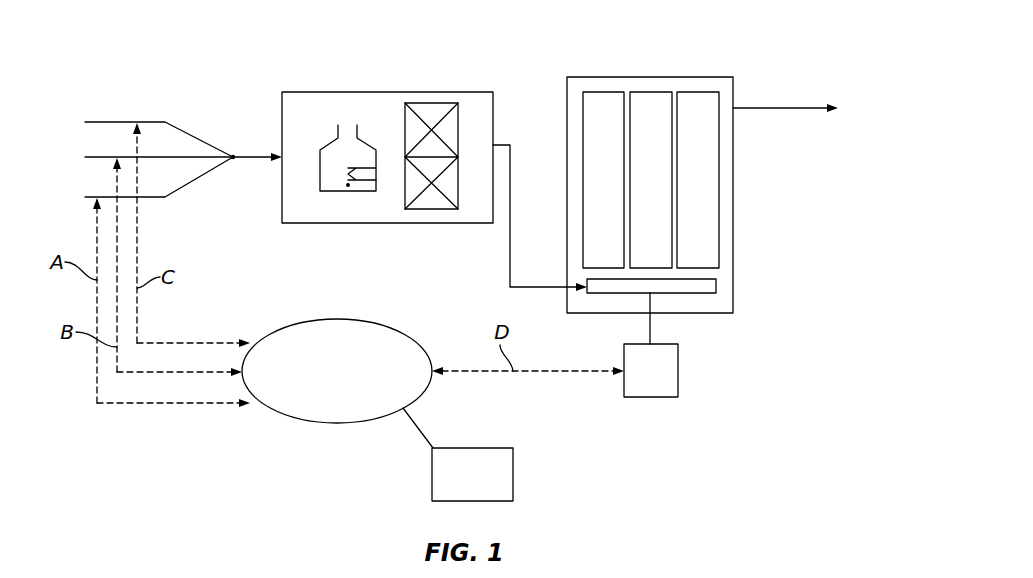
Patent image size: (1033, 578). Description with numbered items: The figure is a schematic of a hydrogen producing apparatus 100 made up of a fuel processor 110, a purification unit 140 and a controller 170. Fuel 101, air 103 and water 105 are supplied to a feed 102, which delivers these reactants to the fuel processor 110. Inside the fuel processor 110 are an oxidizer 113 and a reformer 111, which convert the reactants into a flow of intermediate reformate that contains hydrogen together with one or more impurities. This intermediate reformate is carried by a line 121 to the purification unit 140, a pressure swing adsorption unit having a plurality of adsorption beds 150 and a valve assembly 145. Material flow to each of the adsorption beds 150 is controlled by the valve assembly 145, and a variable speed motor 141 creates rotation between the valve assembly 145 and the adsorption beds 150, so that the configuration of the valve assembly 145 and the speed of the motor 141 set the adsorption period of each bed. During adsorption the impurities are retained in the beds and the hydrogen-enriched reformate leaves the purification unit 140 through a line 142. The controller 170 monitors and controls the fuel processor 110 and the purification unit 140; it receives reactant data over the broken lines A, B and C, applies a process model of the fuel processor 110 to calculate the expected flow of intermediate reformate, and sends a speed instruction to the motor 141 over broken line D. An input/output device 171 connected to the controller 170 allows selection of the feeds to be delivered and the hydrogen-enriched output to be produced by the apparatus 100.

The hydrogen producing apparatus 100 is at (784, 392).
The fuel 101 is at (135, 133).
The feed 102 is at (243, 160).
The air 103 is at (135, 157).
The water 105 is at (135, 183).
The fuel processor 110 is at (375, 223).
The reformer 111 is at (437, 112).
The oxidizer 113 is at (348, 140).
The transfer line 121 is at (510, 214).
The purification unit 140 is at (733, 192).
The variable speed motor 141 is at (651, 345).
The line 142 is at (782, 108).
The valve assembly 145 is at (716, 286).
The adsorption beds 150 is at (653, 102).
The controller 170 is at (337, 371).
The input/output device 171 is at (513, 473).